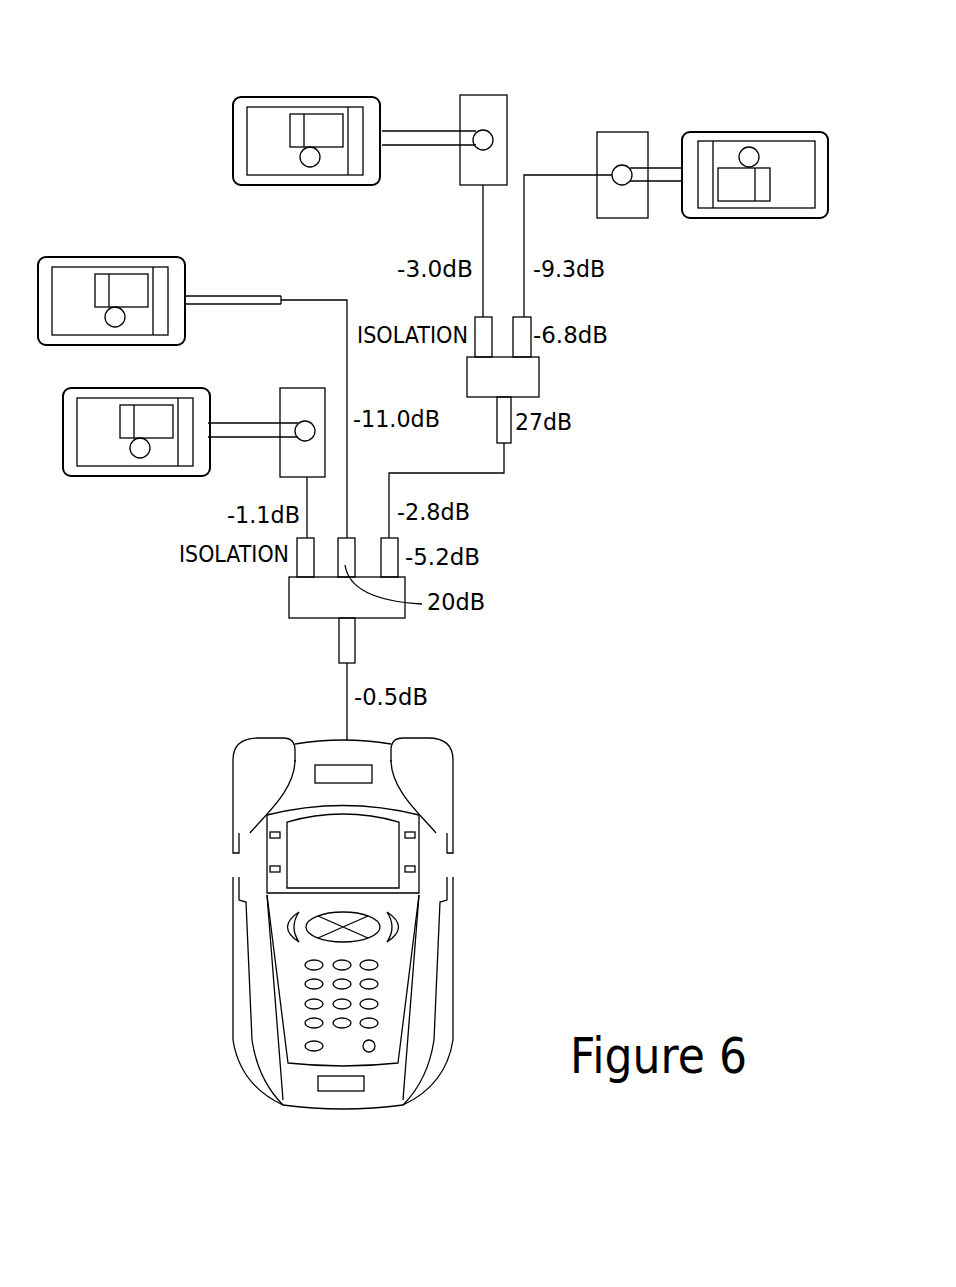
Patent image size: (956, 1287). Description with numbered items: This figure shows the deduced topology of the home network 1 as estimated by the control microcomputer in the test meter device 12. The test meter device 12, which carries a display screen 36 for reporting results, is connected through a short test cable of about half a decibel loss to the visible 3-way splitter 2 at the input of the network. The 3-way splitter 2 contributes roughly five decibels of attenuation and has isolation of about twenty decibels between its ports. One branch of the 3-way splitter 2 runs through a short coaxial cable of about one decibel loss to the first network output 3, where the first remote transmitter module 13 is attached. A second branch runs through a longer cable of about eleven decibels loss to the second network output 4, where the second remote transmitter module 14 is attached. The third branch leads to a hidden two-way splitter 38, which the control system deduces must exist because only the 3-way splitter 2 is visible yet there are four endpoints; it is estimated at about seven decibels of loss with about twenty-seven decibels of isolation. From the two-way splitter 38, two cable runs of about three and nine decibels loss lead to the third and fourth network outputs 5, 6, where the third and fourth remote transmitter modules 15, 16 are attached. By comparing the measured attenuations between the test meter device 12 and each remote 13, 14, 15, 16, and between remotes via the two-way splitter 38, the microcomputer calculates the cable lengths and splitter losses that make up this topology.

The home network 1 is at (158, 84).
The 3-way splitter 2 is at (289, 598).
The network output 3 is at (290, 438).
The network output 4 is at (284, 299).
The network output 5 is at (483, 130).
The network output 6 is at (623, 185).
The test meter device 12 is at (264, 732).
The remote transmitter module 13 is at (137, 475).
The remote transmitter module 14 is at (136, 257).
The remote transmitter module 15 is at (308, 95).
The remote transmitter module 16 is at (733, 220).
The display screen 36 is at (330, 850).
The two-way splitter 38 is at (512, 377).